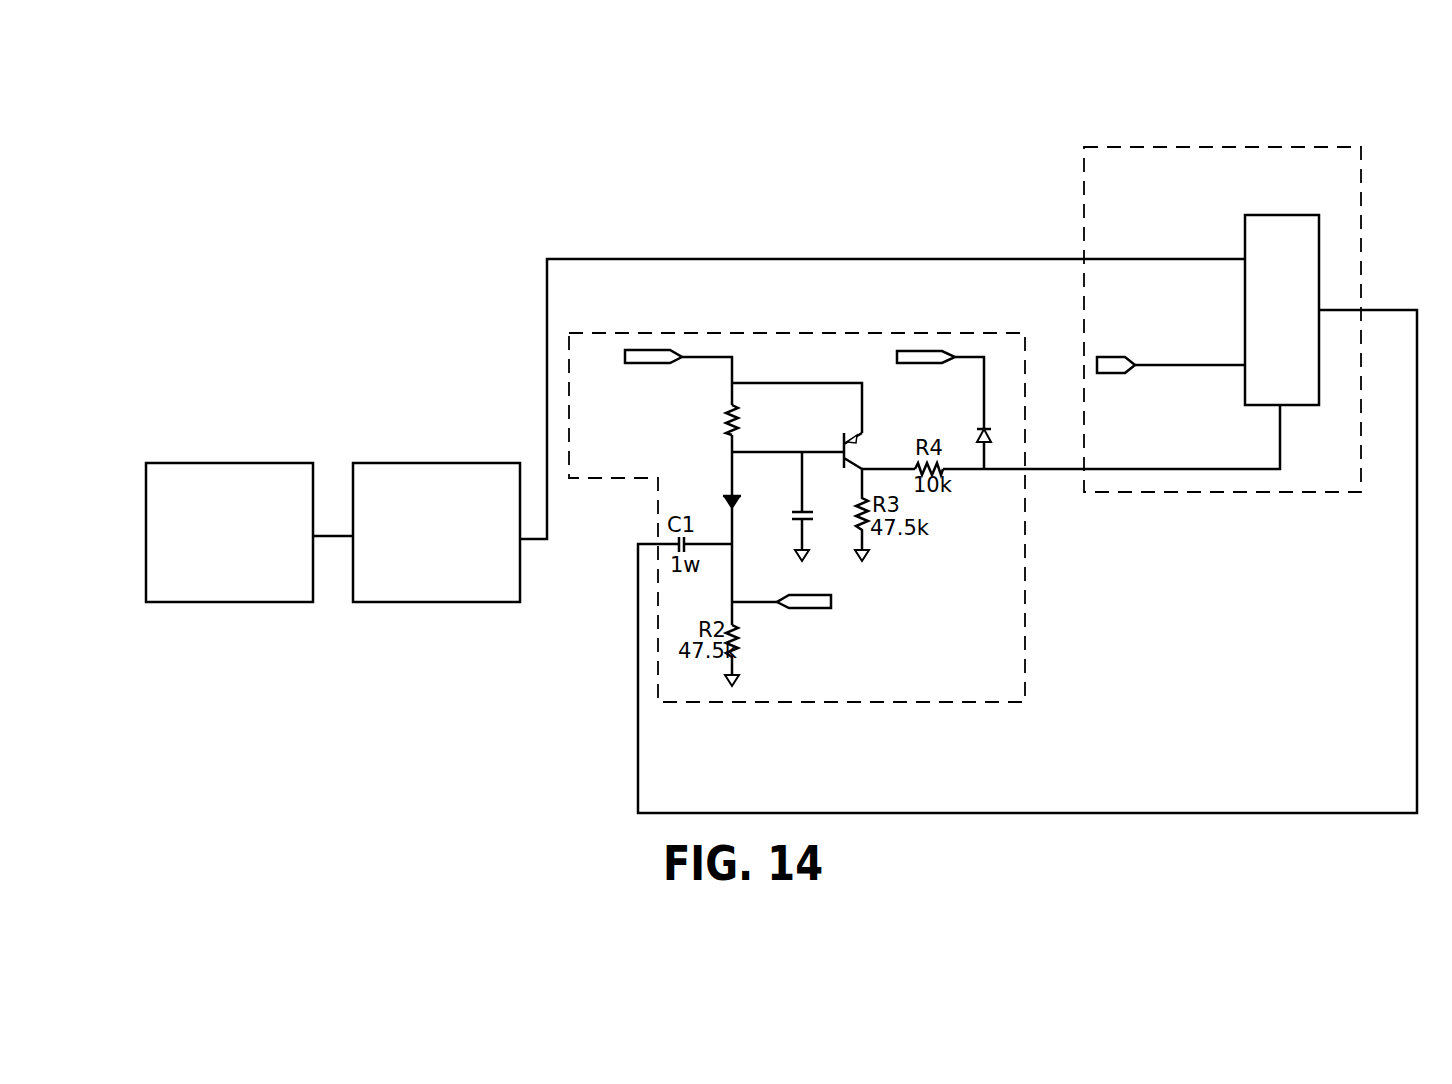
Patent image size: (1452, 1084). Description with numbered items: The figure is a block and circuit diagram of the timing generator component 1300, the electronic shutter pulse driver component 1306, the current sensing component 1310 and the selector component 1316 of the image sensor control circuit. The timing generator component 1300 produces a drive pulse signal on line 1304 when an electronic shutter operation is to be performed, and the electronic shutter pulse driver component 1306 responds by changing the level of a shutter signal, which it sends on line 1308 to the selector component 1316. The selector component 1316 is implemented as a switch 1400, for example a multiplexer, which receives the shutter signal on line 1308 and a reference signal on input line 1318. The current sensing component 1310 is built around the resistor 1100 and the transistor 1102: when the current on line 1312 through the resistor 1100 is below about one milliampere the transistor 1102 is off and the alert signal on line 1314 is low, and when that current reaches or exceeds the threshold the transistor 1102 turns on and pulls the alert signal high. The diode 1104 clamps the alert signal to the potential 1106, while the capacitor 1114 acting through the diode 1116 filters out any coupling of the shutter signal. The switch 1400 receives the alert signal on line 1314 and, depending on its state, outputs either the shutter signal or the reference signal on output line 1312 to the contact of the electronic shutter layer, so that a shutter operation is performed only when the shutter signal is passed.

The timing generator component 1300 is at (193, 603).
The line 1304 is at (343, 540).
The electronic shutter pulse driver component 1306 is at (478, 603).
The line 1308 is at (760, 259).
The current sensing component 1310 is at (907, 703).
The line 1312 is at (648, 350).
The potential 1106 is at (915, 350).
The resistor 1100 is at (688, 412).
The transistor 1102 is at (872, 450).
The diode 1104 is at (976, 450).
The capacitor 1114 is at (814, 530).
The diode 1116 is at (743, 526).
The switch 1400 is at (1268, 213).
The input line 1318 is at (1200, 368).
The line 1314 is at (1150, 470).
The selector component 1316 is at (1352, 492).